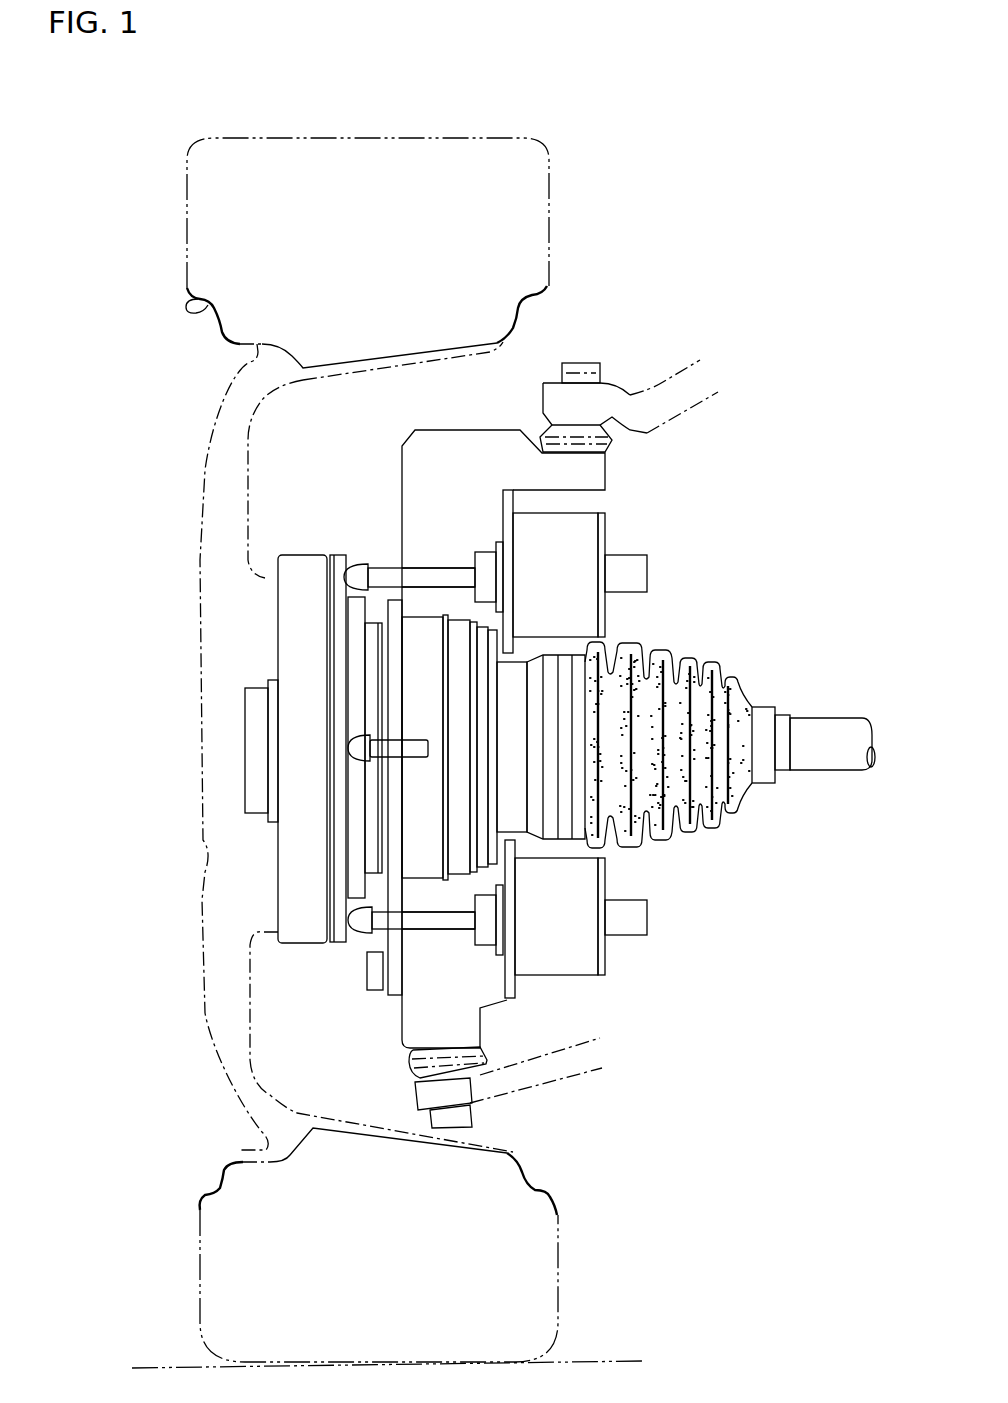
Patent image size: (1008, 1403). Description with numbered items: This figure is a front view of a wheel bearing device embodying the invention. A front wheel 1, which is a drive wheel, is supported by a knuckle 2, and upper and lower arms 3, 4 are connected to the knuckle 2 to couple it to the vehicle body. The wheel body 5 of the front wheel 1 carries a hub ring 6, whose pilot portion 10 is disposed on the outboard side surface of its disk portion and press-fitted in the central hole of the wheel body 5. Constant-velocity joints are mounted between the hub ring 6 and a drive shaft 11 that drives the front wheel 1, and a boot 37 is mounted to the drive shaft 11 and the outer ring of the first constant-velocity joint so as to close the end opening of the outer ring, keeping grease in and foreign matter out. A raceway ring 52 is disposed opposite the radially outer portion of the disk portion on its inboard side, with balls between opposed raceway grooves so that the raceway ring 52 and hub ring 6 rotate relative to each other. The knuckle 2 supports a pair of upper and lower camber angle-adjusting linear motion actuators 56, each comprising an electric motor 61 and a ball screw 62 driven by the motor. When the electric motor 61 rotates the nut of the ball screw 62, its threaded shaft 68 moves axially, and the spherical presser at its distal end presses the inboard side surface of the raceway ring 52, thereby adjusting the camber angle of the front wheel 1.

The front wheel 1 is at (184, 182).
The knuckle 2 is at (412, 453).
The upper arm 3 is at (688, 376).
The lower arm 4 is at (555, 1075).
The wheel body 5 is at (215, 440).
The hub ring 6 is at (285, 614).
The pilot portion 10 is at (252, 737).
The drive shaft 11 is at (837, 730).
The boot 37 is at (718, 668).
The raceway ring 52 is at (340, 855).
The camber angle-adjusting linear motion actuator 56 is at (614, 525).
The electric motor 61 is at (596, 603).
The ball screw 62 is at (438, 562).
The threaded shaft 68 is at (380, 575).